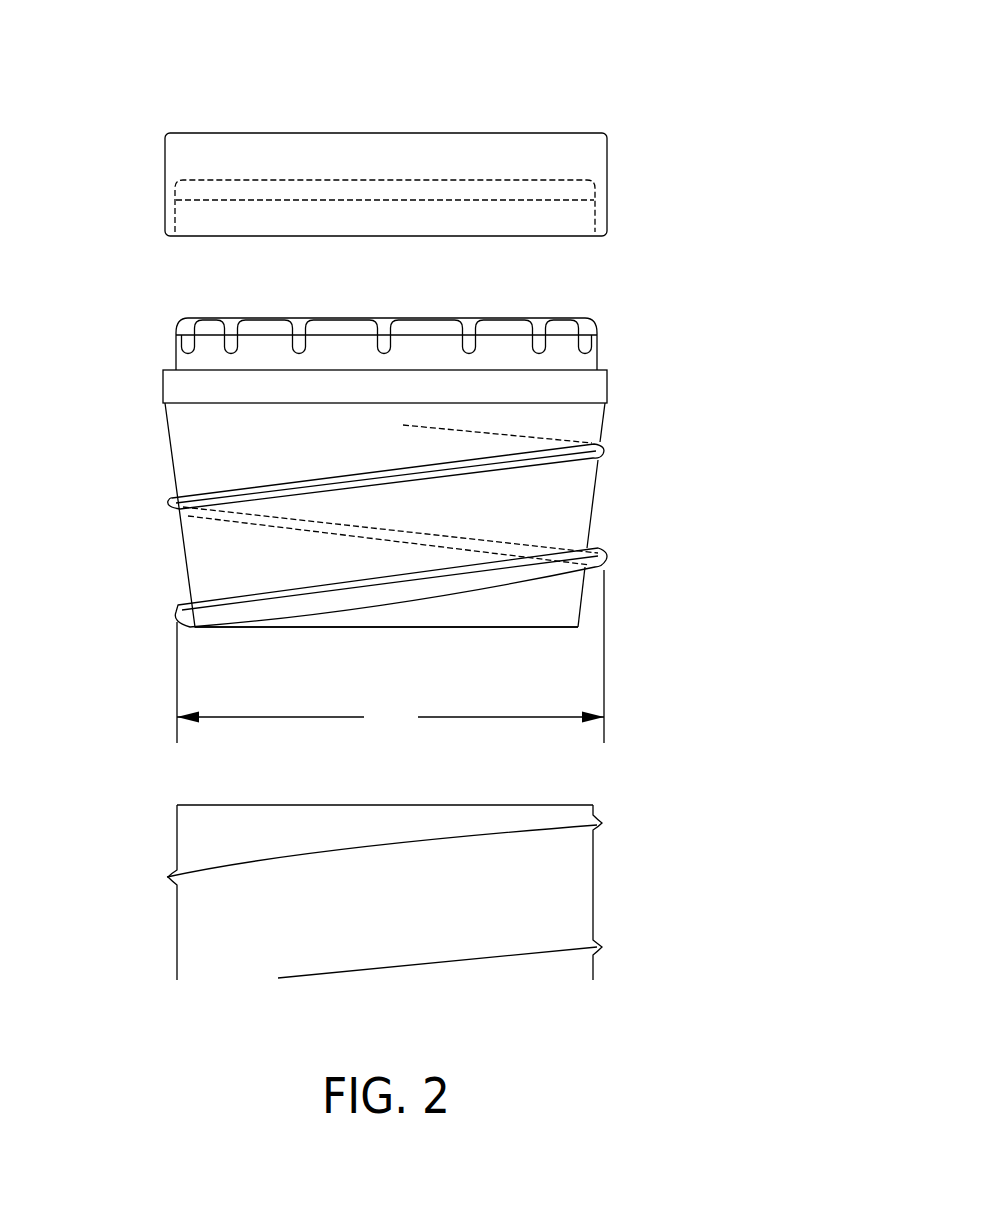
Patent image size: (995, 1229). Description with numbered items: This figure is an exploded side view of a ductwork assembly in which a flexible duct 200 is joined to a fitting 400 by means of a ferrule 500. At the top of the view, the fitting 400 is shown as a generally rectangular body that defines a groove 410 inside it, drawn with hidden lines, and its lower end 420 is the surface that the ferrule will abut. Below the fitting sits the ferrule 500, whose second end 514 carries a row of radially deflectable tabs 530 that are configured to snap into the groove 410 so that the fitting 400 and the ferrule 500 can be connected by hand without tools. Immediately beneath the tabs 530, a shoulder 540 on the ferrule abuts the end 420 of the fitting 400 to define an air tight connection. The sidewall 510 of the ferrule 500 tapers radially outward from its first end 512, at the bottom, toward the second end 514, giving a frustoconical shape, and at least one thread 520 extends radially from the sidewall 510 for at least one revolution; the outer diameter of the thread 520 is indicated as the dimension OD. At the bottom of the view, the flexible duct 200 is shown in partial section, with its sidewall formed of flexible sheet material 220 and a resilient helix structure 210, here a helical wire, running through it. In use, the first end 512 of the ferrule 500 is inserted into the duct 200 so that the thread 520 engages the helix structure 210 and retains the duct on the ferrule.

The fitting 400 is at (449, 84).
The groove 410 is at (593, 193).
The end of the fitting 420 is at (175, 235).
The ferrule 500 is at (660, 523).
The second end of the ferrule 514 is at (177, 333).
The tabs 530 is at (267, 317).
The shoulder 540 is at (163, 370).
The sidewall 510 is at (173, 472).
The first end of the ferrule 512 is at (285, 627).
The thread 520 is at (573, 435).
The flexible duct 200 is at (618, 796).
The helix structure 210 is at (408, 843).
The flexible sheet material 220 is at (273, 846).